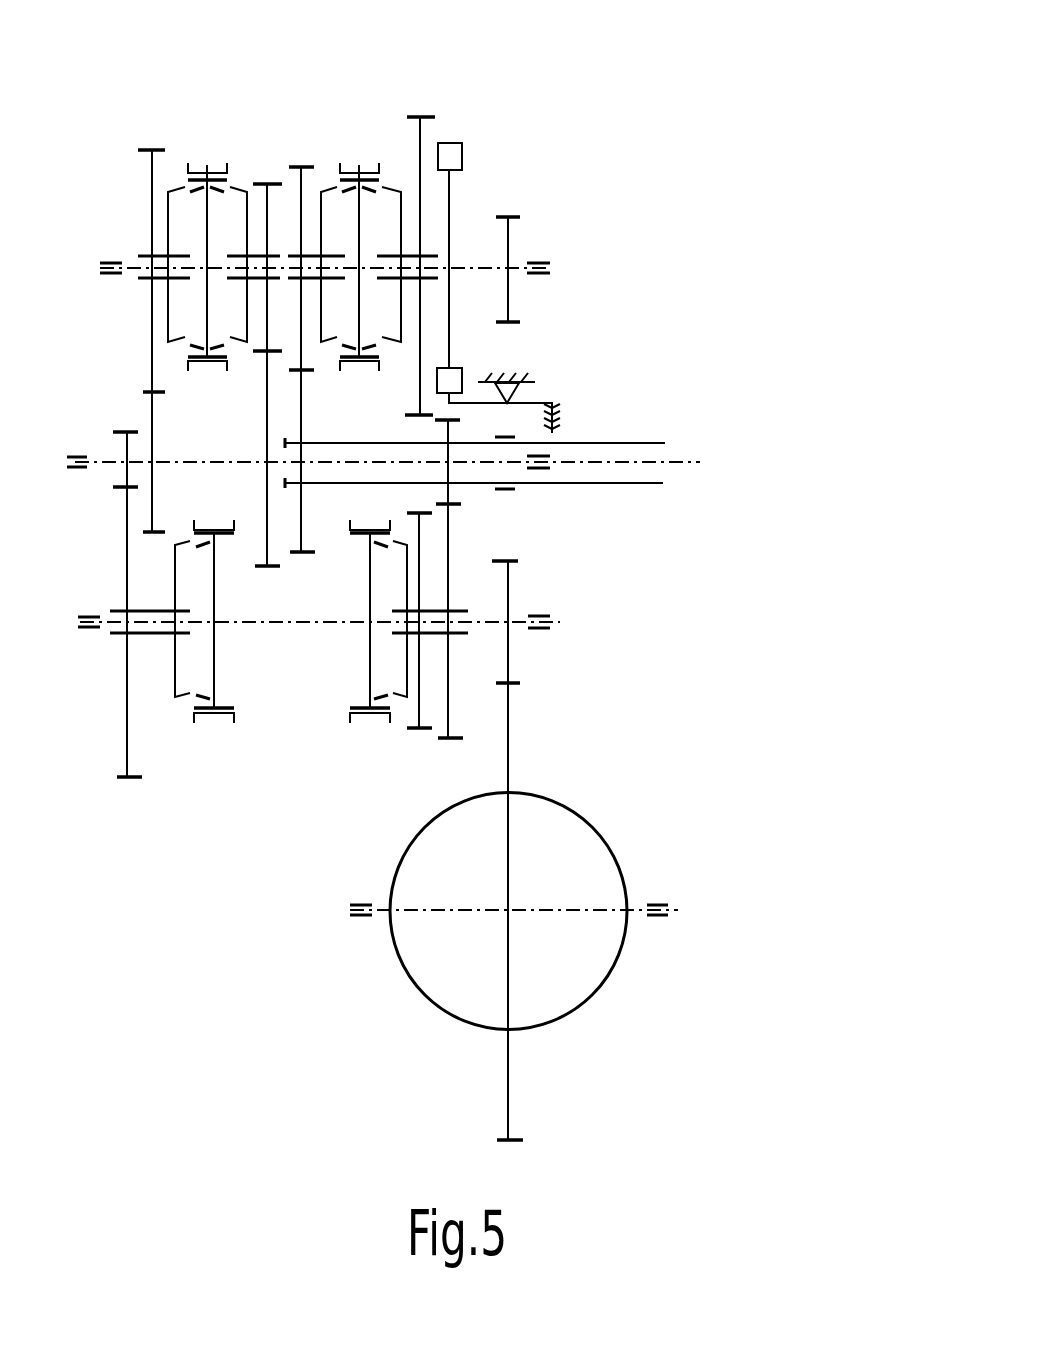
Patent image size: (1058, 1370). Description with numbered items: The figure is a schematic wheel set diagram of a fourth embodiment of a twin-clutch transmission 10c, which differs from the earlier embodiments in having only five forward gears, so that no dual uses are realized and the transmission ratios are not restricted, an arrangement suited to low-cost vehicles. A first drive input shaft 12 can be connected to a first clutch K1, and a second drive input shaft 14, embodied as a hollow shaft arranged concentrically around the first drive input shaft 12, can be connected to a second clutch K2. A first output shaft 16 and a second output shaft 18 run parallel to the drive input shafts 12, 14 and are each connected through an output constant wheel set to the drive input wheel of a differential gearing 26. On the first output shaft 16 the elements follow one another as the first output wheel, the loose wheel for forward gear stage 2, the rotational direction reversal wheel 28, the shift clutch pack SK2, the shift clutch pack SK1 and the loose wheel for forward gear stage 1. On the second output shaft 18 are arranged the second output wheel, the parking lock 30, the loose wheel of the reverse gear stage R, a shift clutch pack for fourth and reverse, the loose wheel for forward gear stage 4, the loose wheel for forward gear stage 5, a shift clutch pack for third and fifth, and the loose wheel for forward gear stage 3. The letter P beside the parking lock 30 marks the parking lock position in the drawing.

The forward gear stage 1 is at (127, 625).
The forward gear stage 2 is at (449, 598).
The forward gear stage 3 is at (151, 323).
The forward gear stage 4 is at (302, 338).
The forward gear stage 5 is at (267, 352).
The reverse gear stage R is at (406, 257).
The parking lock P is at (498, 266).
The twin-clutch transmission 10c is at (725, 252).
The first drive input shaft 12 is at (643, 463).
The second drive input shaft 14 is at (627, 443).
The first output shaft 16 is at (520, 620).
The second output shaft 18 is at (518, 265).
The differential gearing 26 is at (612, 845).
The rotational direction reversal wheel 28 is at (420, 708).
The parking lock 30 is at (462, 152).
The first clutch K1 is at (672, 463).
The second clutch K2 is at (675, 443).
The shift clutch pack SK1 is at (214, 723).
The shift clutch pack SK2 is at (370, 723).